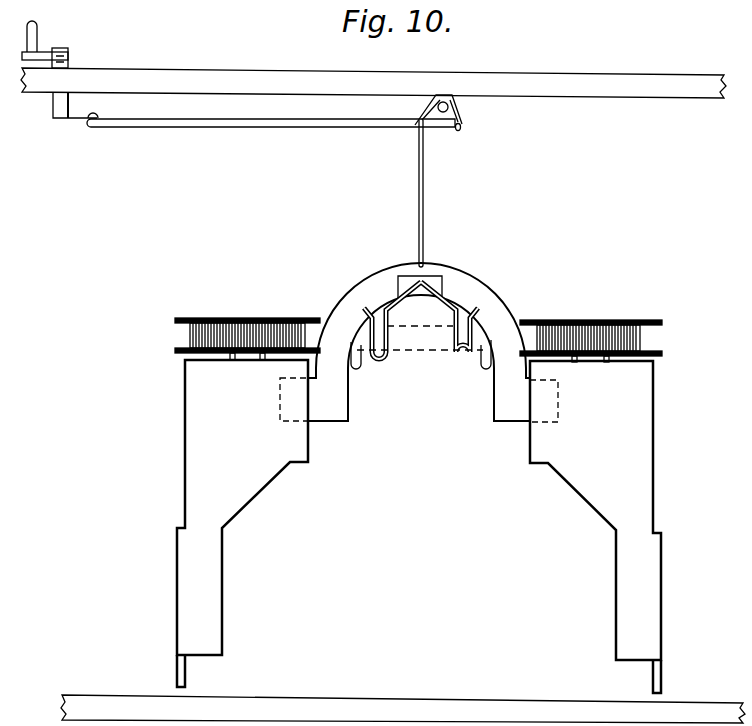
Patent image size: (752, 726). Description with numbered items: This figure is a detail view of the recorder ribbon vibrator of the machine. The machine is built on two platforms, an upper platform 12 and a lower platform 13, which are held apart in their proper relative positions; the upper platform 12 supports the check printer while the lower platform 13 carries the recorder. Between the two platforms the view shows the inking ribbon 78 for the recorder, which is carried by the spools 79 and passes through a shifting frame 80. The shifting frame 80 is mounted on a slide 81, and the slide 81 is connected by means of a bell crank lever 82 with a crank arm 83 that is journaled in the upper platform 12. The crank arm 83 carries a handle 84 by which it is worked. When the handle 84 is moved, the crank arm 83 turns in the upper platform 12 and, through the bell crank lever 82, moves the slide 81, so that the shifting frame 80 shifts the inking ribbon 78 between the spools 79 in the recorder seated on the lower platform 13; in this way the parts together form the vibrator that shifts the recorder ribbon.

The upper platform 12 is at (704, 74).
The lower platform 13 is at (709, 709).
The inking ribbon 78 is at (189, 338).
The spools 79 is at (306, 318).
The shifting frame 80 is at (462, 360).
The slide 81 is at (480, 290).
The bell crank lever 82 is at (462, 125).
The crank arm 83 is at (67, 120).
The handle 84 is at (36, 43).